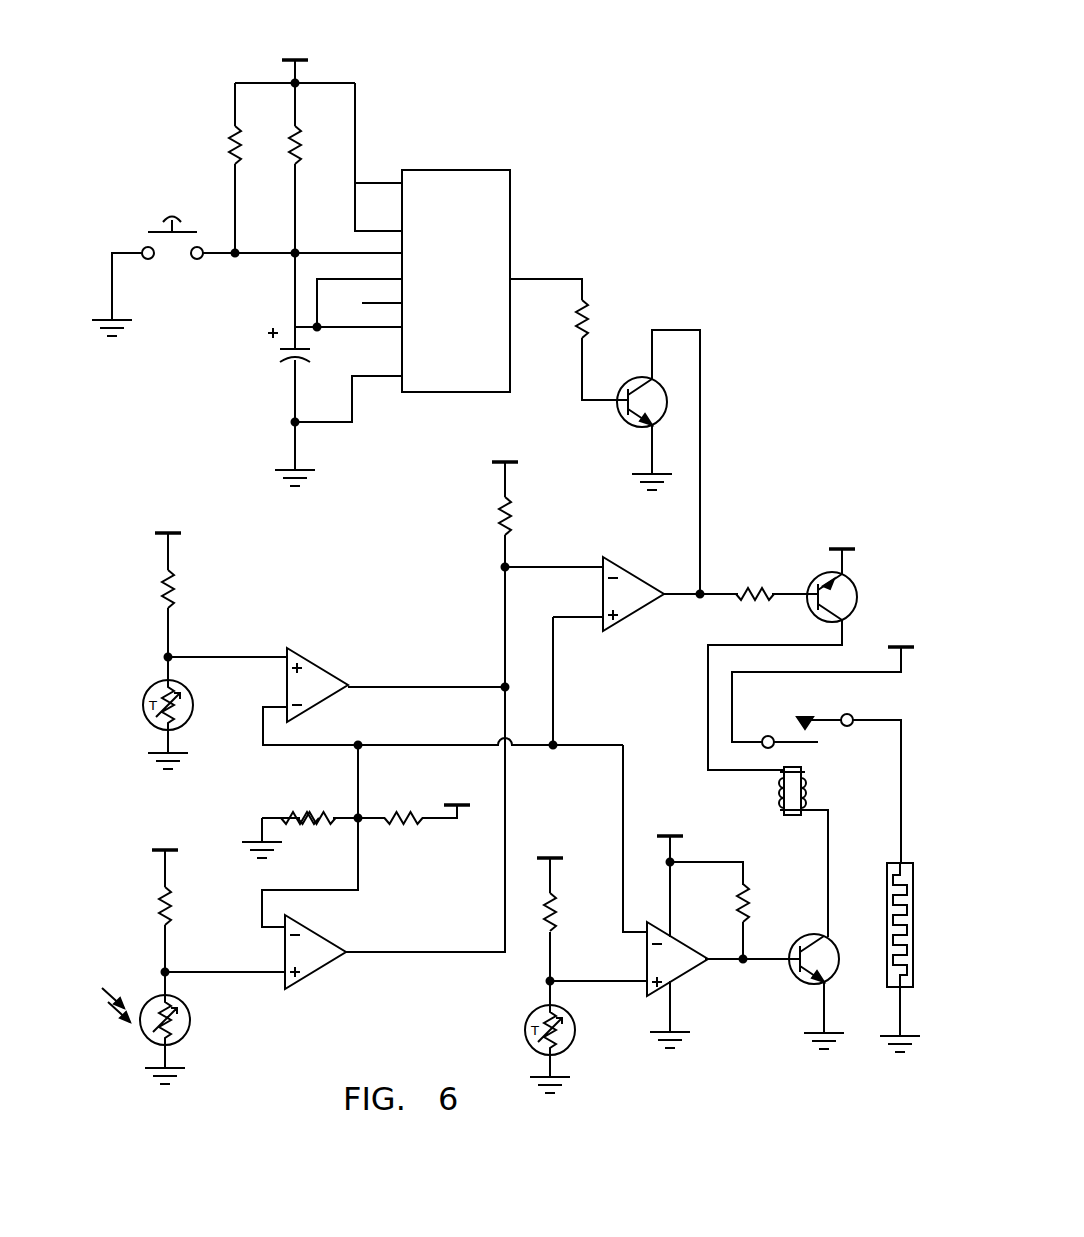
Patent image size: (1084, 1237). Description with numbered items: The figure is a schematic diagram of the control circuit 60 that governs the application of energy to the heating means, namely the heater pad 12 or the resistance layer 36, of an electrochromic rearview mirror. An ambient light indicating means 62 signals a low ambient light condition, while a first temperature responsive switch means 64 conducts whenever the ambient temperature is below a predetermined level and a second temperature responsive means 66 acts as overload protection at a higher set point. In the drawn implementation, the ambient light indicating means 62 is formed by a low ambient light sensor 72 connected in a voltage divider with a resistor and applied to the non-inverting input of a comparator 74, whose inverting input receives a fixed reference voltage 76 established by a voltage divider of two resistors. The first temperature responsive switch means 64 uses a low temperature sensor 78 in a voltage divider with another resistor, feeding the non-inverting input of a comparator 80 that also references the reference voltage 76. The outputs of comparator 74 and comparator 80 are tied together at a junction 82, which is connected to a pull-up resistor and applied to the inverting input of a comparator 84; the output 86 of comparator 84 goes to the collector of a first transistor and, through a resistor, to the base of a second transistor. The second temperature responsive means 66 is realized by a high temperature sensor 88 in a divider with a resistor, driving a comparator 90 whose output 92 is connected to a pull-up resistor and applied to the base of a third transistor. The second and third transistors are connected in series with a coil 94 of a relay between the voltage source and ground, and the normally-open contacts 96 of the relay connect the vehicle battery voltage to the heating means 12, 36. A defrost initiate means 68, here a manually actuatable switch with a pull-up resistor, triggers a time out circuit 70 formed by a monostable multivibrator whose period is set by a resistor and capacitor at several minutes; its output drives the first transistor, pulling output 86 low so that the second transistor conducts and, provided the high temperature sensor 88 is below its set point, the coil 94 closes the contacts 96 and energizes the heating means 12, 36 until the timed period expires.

The heater pad 12 is at (877, 940).
The resistance layer 36 is at (882, 877).
The control circuit 60 is at (379, 588).
The ambient light indicating means 62 is at (227, 954).
The first temperature responsive switch means 64 is at (242, 651).
The second temperature responsive means 66 is at (629, 1051).
The defrost initiate means 68 is at (198, 168).
The time out circuit 70 is at (609, 223).
The low ambient light sensor 72 is at (191, 1018).
The comparator 74 is at (315, 972).
The fixed reference voltage 76 is at (362, 822).
The low temperature sensor 78 is at (193, 712).
The comparator 80 is at (315, 660).
The junction 82 is at (502, 712).
The comparator 84 is at (624, 624).
The output 86 is at (700, 596).
The high temperature sensor 88 is at (566, 1049).
The comparator 90 is at (688, 972).
The output 92 is at (765, 957).
The coil 94 is at (777, 791).
The normally-open contacts 96 is at (825, 716).